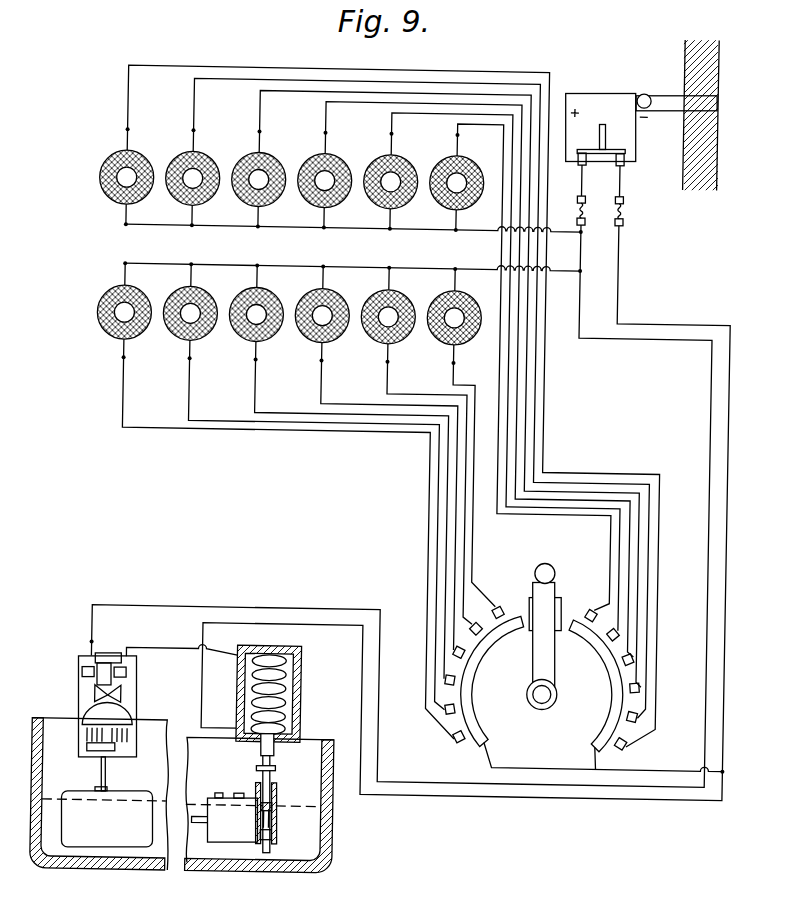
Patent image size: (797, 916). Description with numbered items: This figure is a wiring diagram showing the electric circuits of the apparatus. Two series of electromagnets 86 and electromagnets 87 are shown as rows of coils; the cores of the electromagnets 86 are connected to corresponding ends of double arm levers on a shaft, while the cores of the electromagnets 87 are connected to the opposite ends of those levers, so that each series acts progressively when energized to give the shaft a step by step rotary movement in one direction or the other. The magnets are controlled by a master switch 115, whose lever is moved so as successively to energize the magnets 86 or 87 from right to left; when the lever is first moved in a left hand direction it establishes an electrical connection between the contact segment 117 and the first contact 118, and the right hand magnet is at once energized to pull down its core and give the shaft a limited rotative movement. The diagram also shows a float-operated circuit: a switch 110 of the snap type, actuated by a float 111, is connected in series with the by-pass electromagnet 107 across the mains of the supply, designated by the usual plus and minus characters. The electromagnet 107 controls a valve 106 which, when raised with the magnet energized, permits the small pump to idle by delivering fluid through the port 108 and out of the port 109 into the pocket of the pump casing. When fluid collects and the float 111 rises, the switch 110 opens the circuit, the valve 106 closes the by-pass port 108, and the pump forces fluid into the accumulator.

The electromagnets 87 is at (123, 152).
The electromagnets 86 is at (111, 335).
The master switch 115 is at (543, 654).
The contact segment 117 is at (504, 631).
The first contact 118 is at (501, 607).
The switch 110 is at (138, 698).
The float 111 is at (107, 819).
The electromagnet 107 is at (302, 697).
The valve 106 is at (275, 790).
The port 108 is at (258, 804).
The port 109 is at (274, 812).